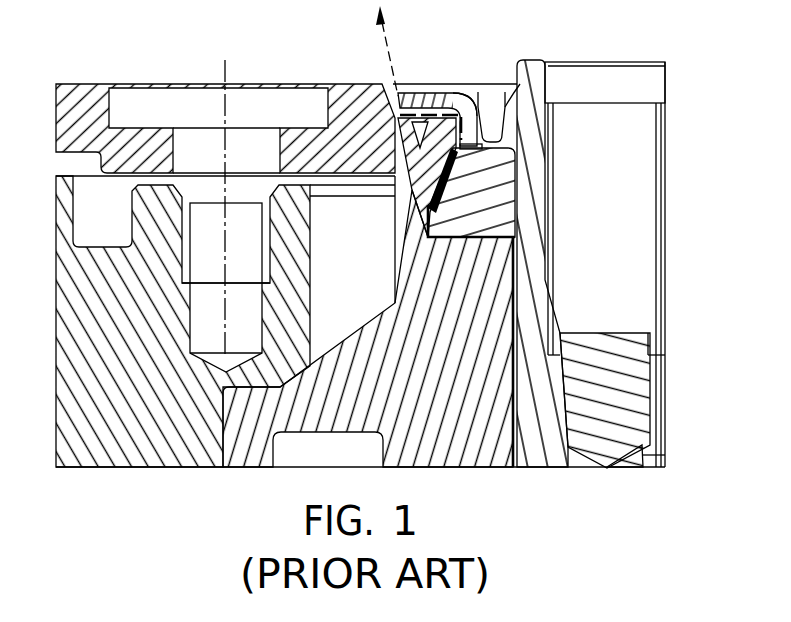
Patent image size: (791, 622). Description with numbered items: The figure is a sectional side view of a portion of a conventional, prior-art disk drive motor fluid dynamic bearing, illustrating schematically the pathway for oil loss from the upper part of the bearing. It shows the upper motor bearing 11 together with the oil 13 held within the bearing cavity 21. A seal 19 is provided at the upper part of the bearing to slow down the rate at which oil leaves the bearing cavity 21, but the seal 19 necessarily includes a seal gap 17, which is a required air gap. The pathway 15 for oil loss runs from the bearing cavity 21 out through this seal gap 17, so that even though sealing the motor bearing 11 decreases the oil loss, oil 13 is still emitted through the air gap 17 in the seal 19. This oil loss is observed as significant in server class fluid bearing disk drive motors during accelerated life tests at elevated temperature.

The upper motor bearing 11 is at (488, 218).
The oil 13 is at (462, 196).
The pathway 15 is at (383, 44).
The seal gap 17 is at (398, 93).
The seal 19 is at (458, 95).
The bearing cavity 21 is at (473, 142).